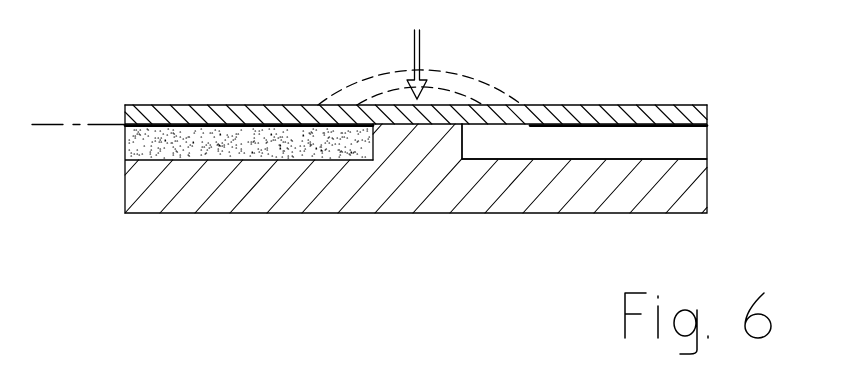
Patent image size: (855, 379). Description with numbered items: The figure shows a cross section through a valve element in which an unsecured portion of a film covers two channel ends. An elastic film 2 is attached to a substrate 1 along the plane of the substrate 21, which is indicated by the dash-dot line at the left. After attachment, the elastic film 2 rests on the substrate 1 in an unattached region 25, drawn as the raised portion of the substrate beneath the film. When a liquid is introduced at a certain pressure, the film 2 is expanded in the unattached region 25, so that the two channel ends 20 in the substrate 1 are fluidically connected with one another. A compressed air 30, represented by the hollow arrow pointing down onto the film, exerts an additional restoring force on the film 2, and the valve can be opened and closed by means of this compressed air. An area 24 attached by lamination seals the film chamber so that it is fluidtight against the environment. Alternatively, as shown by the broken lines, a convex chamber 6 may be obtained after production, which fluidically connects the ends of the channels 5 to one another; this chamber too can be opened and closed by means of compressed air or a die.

The substrate 1 is at (693, 193).
The elastic film 2 is at (173, 117).
The channel ends 20 is at (465, 136).
The plane of the substrate 21 is at (70, 100).
The area attached by lamination 24 is at (633, 122).
The unattached region 25 is at (443, 133).
The compressed air 30 is at (417, 51).
The channels 5 is at (677, 142).
The convex chamber 6 is at (398, 100).